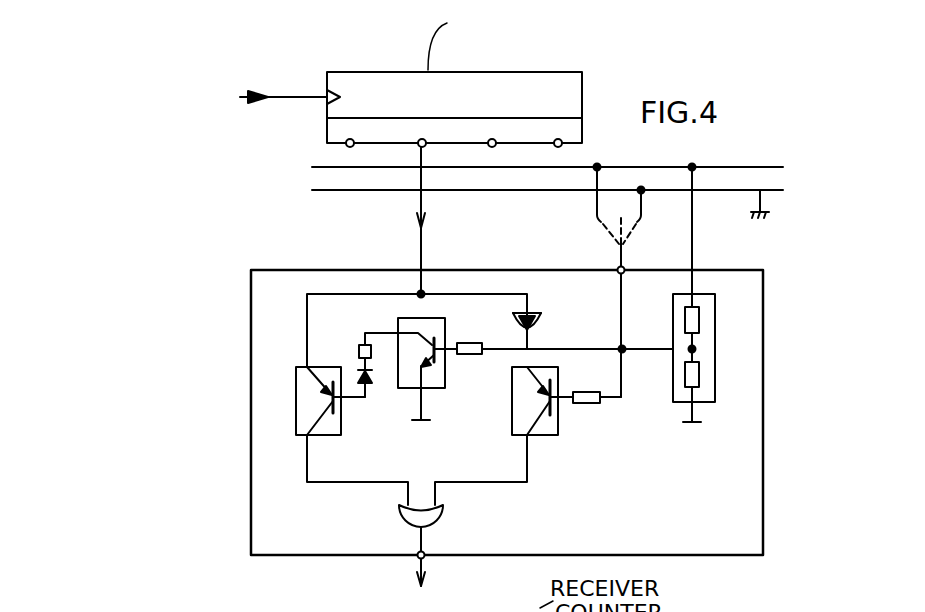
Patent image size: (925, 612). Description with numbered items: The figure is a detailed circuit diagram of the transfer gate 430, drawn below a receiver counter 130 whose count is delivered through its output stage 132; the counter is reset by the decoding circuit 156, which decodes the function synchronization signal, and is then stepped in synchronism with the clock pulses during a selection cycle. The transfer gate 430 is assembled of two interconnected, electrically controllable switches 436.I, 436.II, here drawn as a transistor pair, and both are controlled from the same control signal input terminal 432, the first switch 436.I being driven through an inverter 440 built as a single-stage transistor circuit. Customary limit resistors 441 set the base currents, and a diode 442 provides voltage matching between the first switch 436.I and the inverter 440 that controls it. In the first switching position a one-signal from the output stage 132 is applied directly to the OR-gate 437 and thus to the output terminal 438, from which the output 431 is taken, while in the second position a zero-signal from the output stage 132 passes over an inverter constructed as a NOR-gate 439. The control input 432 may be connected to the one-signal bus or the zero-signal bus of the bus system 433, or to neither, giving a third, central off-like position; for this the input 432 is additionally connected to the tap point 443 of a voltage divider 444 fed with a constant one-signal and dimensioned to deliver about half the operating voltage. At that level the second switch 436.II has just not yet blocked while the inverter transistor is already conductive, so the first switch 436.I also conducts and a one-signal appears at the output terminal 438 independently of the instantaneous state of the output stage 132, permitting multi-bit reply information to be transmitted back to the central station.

The receiver counter 130 is at (330, 72).
The output stage 132 is at (328, 131).
The decoding circuit 156 is at (259, 97).
The bus system 433 is at (805, 160).
The control signal input terminal 432 is at (617, 268).
The transfer gate 430 is at (752, 520).
The first switch 436.I is at (299, 440).
The second switch 436.II is at (553, 428).
The OR-gate 437 is at (440, 515).
The output terminal 438 is at (427, 561).
The output signal 431 is at (428, 585).
The NOR-gate 439 is at (543, 320).
The inverter 440 is at (441, 384).
The limit resistors 441 is at (360, 348).
The diode 442 is at (373, 386).
The tap point 443 is at (697, 349).
The voltage divider 444 is at (715, 396).